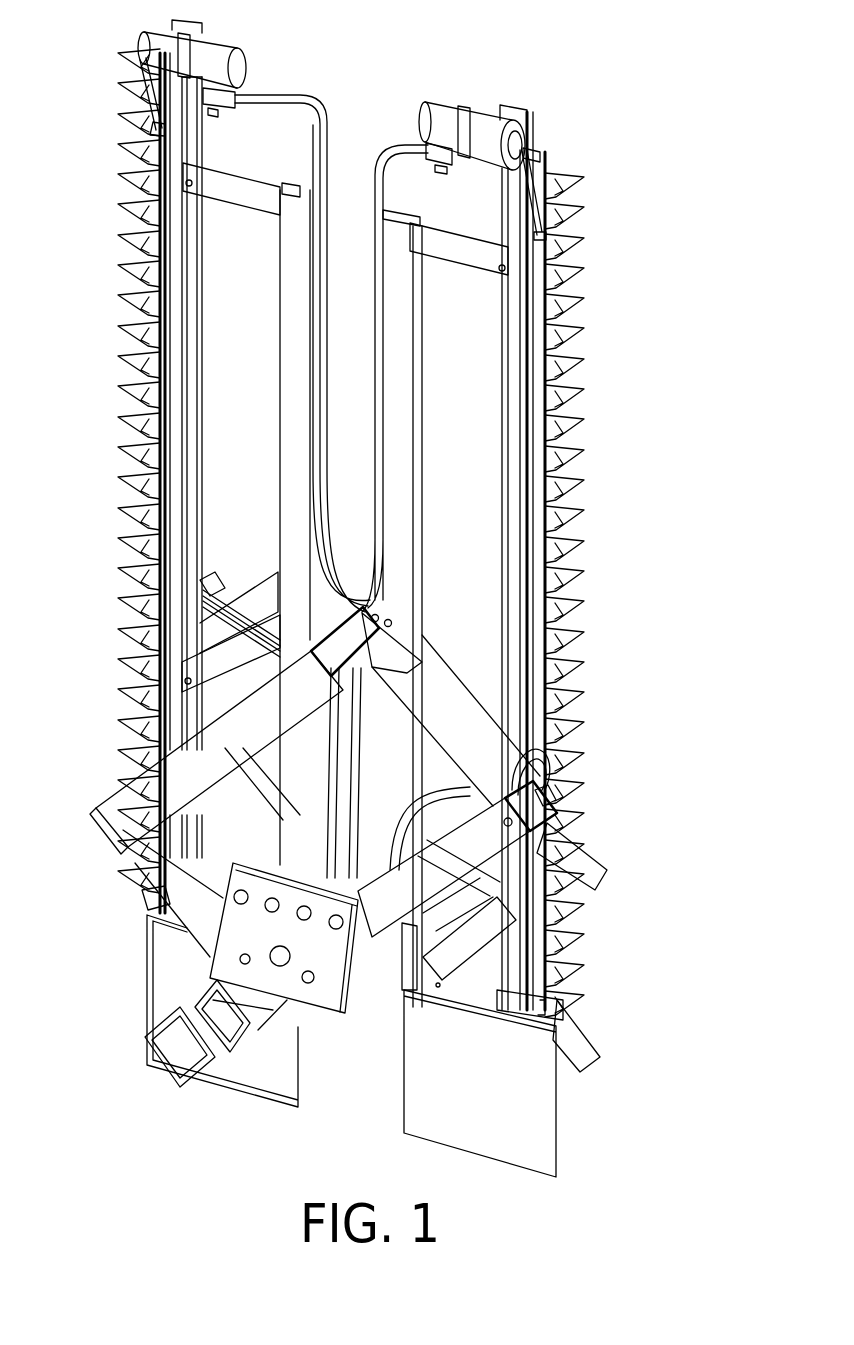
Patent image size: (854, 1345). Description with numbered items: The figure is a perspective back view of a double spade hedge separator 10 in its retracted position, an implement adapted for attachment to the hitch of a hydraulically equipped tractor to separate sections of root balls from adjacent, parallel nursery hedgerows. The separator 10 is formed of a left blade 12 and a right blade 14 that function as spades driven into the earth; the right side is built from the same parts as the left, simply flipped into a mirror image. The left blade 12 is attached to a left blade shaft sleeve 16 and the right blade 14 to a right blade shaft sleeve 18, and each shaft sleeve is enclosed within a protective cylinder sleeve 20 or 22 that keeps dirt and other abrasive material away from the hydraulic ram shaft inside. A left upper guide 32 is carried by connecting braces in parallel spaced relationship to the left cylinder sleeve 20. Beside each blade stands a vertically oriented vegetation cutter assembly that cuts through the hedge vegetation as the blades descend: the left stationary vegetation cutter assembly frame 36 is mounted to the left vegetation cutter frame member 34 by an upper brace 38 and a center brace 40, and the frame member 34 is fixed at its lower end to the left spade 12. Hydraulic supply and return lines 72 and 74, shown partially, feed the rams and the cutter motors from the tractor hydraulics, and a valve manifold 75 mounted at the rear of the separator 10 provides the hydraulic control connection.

The double spade hedge separator 10 is at (640, 305).
The left blade 12 is at (288, 1080).
The right blade 14 is at (548, 1150).
The left blade shaft sleeve 16 is at (205, 1050).
The right blade shaft sleeve 18 is at (462, 987).
The left cylinder sleeve 20 is at (485, 828).
The right cylinder sleeve 22 is at (267, 780).
The left upper guide 32 is at (200, 752).
The left vegetation cutter frame member 34 is at (290, 333).
The left stationary vegetation cutter assembly frame 36 is at (190, 432).
The upper brace 38 is at (237, 205).
The center brace 40 is at (205, 687).
The hydraulic supply line 72 is at (253, 100).
The hydraulic return line 74 is at (252, 112).
The manifold plate 75 is at (347, 992).